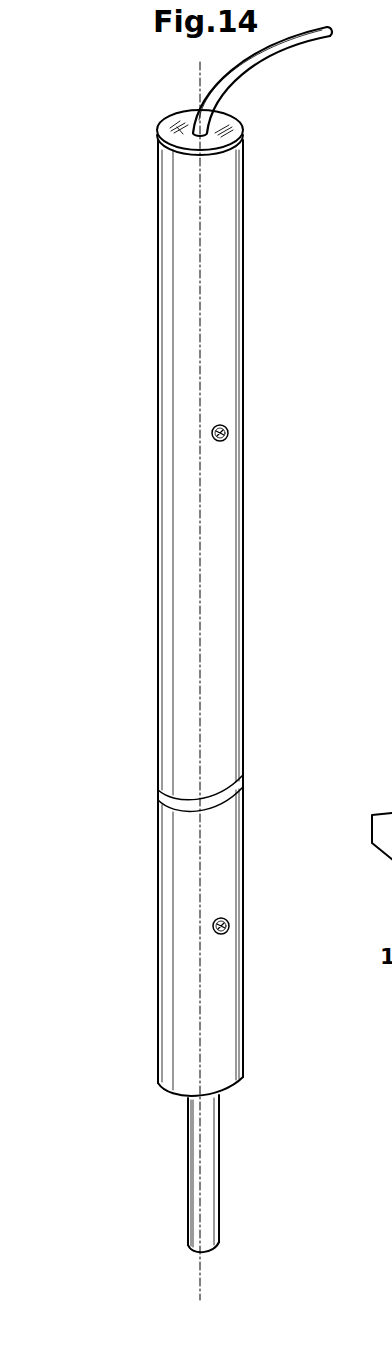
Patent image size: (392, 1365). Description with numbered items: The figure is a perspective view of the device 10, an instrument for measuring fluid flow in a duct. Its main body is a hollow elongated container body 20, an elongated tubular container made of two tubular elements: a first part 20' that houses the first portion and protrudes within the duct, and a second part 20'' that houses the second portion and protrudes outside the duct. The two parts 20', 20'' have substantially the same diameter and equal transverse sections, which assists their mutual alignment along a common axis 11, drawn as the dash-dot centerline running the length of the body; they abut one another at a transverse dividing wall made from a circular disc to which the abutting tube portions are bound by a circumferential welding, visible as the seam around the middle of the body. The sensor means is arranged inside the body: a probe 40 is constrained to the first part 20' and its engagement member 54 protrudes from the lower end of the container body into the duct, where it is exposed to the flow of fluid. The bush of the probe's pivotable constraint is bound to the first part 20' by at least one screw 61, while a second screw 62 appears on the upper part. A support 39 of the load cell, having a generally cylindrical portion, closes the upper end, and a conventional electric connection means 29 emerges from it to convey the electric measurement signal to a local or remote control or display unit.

The device 10 is at (141, 247).
The common axis 11 is at (200, 78).
The hollow elongated container body 20 is at (198, 618).
The second part of the hollow elongated container body 20'' is at (243, 467).
The first part of the hollow elongated container body 20' is at (240, 938).
The electric connection means 29 is at (270, 50).
The support 39 is at (167, 132).
The probe 40 is at (237, 1148).
The engagement member 54 is at (217, 1197).
The screw 61 is at (218, 933).
The screw 62 is at (218, 440).